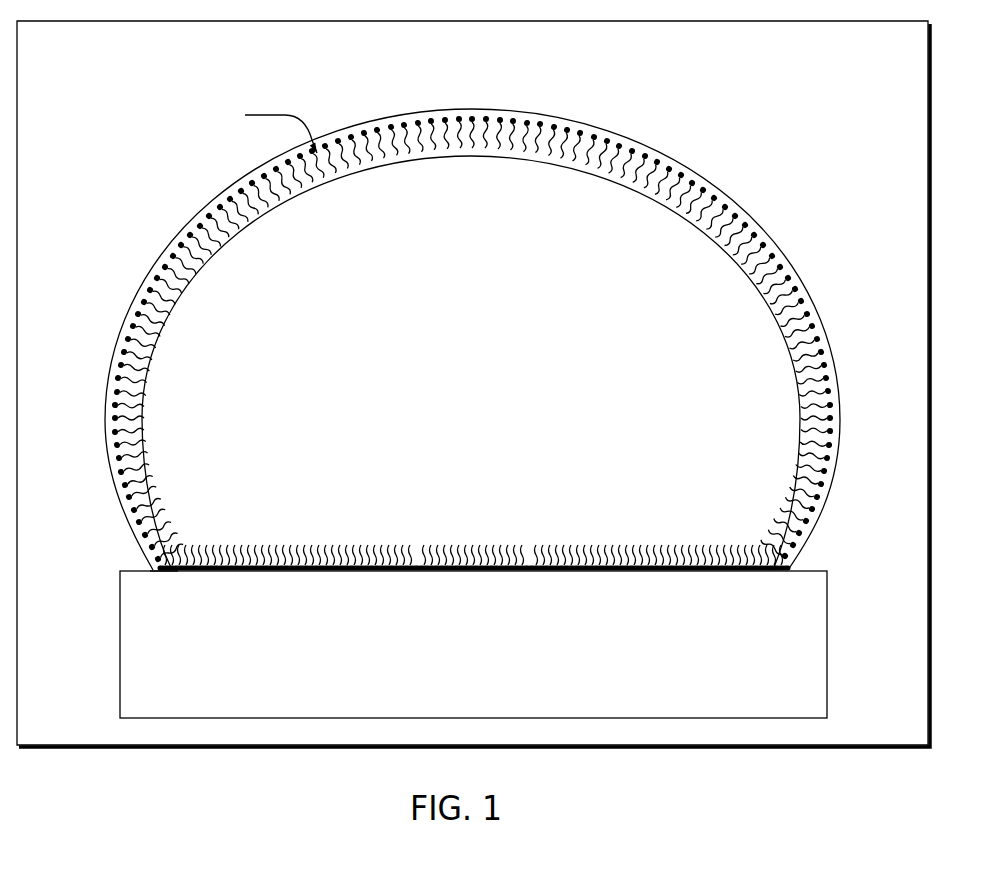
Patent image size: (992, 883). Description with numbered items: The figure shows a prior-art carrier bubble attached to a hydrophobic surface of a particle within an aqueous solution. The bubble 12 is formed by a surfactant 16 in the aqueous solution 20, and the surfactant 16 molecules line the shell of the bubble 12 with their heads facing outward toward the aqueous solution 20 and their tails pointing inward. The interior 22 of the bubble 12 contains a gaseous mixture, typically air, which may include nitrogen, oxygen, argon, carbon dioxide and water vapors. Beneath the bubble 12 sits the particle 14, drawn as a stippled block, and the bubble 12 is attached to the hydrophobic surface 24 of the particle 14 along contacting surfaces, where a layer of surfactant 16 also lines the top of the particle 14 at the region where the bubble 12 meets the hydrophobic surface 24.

The bubble 12 is at (692, 166).
The particle 14 is at (828, 643).
The surfactant 16 is at (234, 200).
The aqueous solution 20 is at (858, 96).
The interior 22 is at (475, 378).
The hydrophobic surface 24 is at (125, 570).